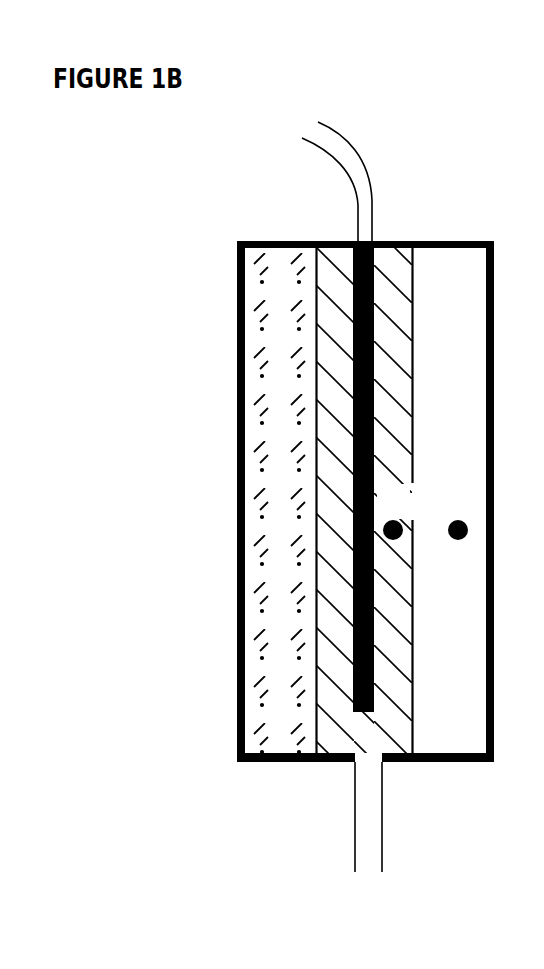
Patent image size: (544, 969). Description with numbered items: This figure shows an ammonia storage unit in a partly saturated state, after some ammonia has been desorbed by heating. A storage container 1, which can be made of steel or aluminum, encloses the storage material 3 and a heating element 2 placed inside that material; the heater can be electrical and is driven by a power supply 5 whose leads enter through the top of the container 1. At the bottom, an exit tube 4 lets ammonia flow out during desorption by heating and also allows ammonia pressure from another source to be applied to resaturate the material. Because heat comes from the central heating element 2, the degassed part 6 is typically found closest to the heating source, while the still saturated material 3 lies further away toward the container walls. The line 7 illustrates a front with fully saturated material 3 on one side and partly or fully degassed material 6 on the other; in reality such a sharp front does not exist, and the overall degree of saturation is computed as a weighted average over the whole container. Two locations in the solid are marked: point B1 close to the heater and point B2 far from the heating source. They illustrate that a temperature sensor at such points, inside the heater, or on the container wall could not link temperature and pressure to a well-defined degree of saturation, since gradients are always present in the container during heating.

The storage container 1 is at (224, 533).
The heating element 2 is at (336, 298).
The storage material 3 is at (254, 347).
The exit tube 4 is at (358, 830).
The power supply 5 is at (315, 169).
The degassed part 6 is at (318, 493).
The line 7 is at (299, 426).
The location close to the heater B1 is at (393, 512).
The location far from the heating source B2 is at (456, 512).